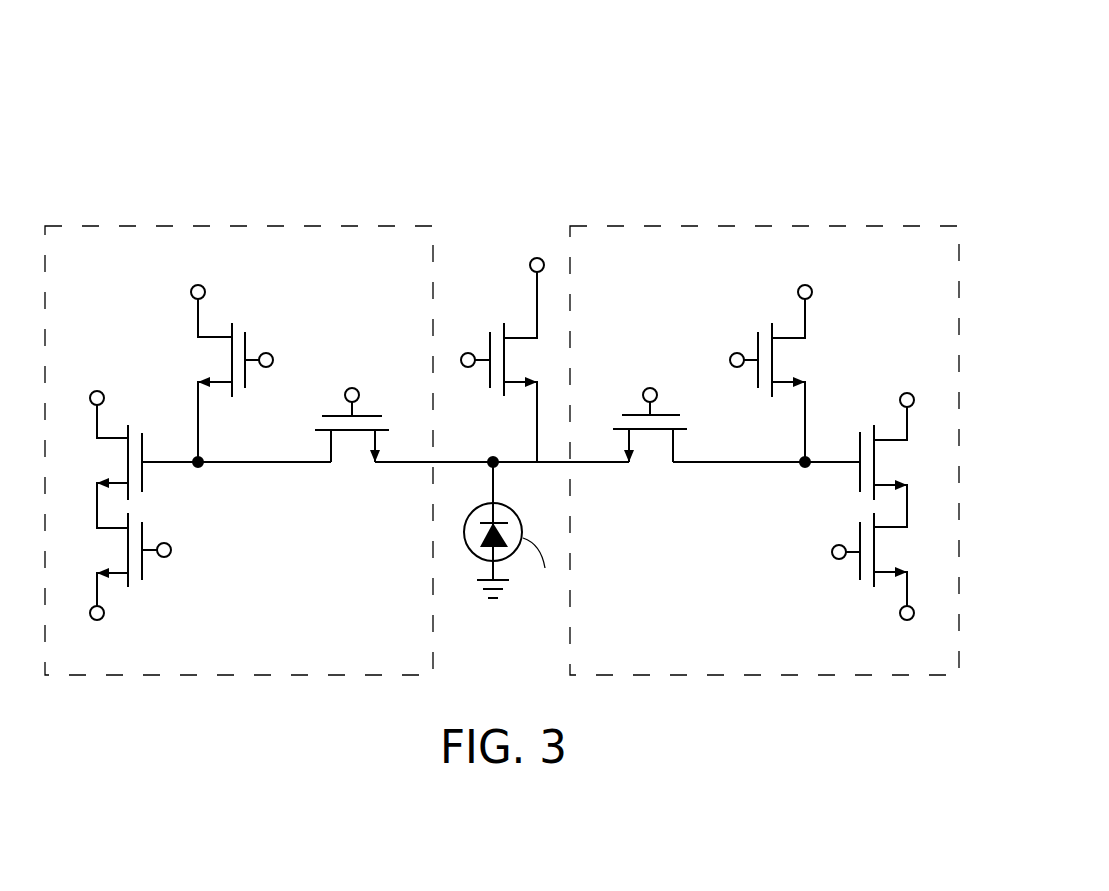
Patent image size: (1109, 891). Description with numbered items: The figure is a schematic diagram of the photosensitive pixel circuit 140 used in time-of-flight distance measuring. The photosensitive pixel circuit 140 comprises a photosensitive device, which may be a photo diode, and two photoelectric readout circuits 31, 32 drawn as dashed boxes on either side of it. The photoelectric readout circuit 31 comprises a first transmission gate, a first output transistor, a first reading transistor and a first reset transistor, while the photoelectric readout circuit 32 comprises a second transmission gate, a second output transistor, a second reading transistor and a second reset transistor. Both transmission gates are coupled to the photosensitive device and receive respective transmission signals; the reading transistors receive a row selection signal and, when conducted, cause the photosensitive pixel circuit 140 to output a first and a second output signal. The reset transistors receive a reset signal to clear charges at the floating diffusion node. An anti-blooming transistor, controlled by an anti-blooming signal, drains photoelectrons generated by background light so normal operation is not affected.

The photosensitive pixel circuit 140 is at (836, 80).
The photoelectric readout circuit 31 is at (277, 226).
The photoelectric readout circuit 32 is at (731, 226).